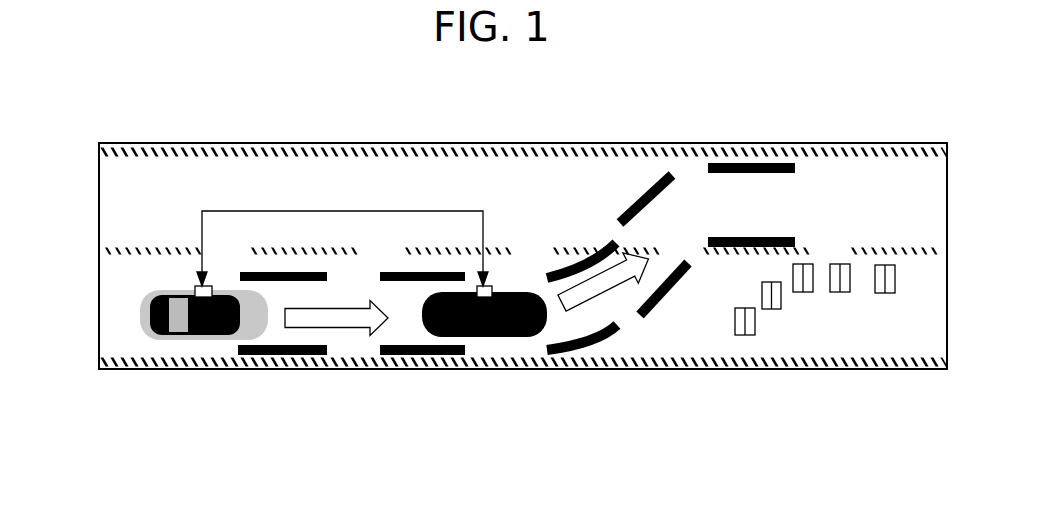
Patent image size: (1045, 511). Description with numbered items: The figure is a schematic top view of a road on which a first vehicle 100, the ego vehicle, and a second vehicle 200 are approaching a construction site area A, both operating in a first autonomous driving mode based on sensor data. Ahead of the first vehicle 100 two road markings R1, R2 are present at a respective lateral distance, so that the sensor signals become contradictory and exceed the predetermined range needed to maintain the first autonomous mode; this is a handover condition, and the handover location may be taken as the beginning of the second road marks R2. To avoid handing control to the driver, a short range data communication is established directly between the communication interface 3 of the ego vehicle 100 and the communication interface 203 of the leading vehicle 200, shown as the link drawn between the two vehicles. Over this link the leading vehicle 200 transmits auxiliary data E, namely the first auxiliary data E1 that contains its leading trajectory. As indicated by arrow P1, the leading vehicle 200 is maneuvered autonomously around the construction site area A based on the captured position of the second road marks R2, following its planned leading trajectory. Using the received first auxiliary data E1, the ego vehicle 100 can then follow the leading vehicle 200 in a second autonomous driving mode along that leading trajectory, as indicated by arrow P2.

The road marking R1 is at (118, 252).
The second road marks R2 is at (299, 356).
The first vehicle 100 is at (192, 336).
The second vehicle 200 is at (473, 338).
The communication interface 3 is at (197, 287).
The communication interface 203 is at (479, 288).
The communication link E is at (342, 184).
The first auxiliary data E1 is at (330, 211).
The arrow P2 is at (341, 327).
The arrow P1 is at (612, 296).
The construction site area A is at (845, 325).